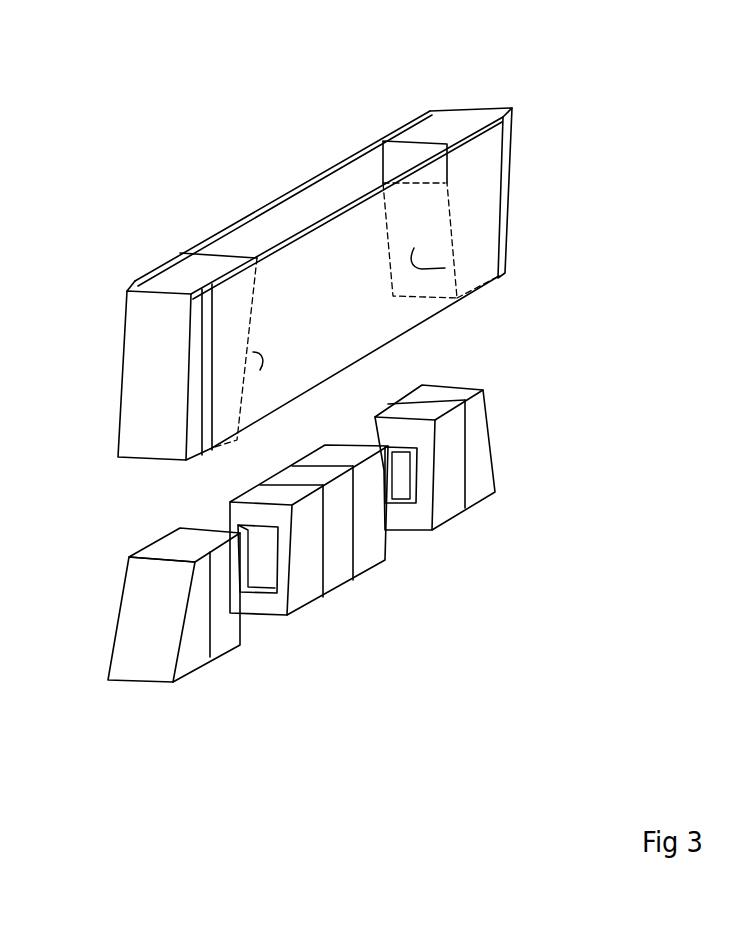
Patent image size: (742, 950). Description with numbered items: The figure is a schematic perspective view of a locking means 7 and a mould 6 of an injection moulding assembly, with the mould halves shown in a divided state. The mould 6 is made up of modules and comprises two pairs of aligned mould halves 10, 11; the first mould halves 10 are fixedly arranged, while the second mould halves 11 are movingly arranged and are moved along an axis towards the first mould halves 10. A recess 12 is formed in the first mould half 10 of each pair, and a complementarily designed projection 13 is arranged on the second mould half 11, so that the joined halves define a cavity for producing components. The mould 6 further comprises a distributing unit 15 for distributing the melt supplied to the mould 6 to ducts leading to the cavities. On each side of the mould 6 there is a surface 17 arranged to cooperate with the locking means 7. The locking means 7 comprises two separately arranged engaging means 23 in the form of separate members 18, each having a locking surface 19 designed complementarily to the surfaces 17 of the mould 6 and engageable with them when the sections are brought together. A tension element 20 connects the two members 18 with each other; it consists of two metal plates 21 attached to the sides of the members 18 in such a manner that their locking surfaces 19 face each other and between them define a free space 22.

The mould 6 is at (448, 713).
The locking means 7 is at (185, 125).
The first mould half 10 is at (297, 607).
The second mould half 11 is at (220, 642).
The recess 12 is at (263, 568).
The projection 13 is at (400, 488).
The distributing unit 15 is at (333, 583).
The surface 17 is at (135, 612).
The member 18 is at (153, 358).
The locking surface 19 is at (260, 370).
The tension element 20 is at (274, 202).
The metal plate 21 is at (342, 180).
The free space 22 is at (247, 247).
The engaging means 23 is at (148, 322).